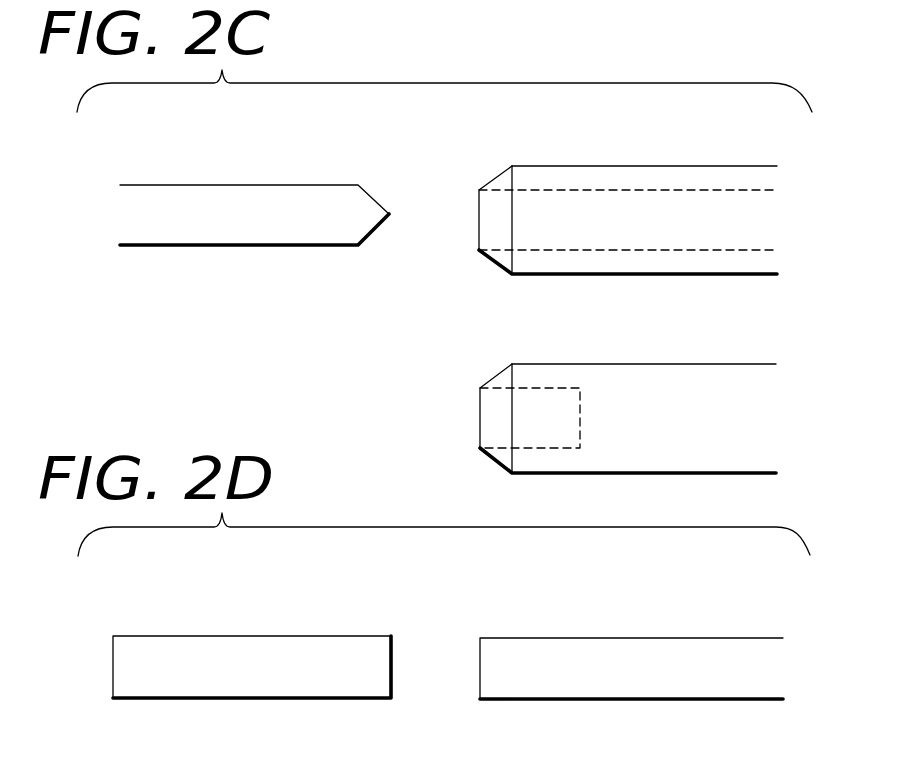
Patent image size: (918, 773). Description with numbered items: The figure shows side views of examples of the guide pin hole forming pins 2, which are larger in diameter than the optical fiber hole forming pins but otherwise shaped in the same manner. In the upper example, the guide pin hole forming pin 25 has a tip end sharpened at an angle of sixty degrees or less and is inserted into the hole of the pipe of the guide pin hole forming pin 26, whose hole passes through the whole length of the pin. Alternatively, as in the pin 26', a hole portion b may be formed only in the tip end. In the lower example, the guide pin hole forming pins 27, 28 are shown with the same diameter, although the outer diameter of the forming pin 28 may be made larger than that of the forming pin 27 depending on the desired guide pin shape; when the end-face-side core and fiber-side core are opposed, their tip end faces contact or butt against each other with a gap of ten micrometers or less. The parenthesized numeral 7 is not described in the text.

In FIG. 2C, the guide pin hole forming pin 2 is at (175, 236).
In FIG. 2D, the guide pin hole forming pin 2 is at (174, 645).
In FIG. 2C, the second member (base body) 7 is at (556, 172).
In FIG. 2D, the second member (base body) 7 is at (556, 645).
In FIG. 2C, the guide pin hole forming pin 25 is at (258, 185).
In FIG. 2C, the guide pin hole forming pin 26 is at (628, 189).
In FIG. 2C, the guide pin hole forming pin 26' is at (599, 389).
In FIG. 2C, the hole portion b is at (488, 423).
In FIG. 2D, the guide pin hole forming pin 27 is at (258, 636).
In FIG. 2D, the guide pin hole forming pin 28 is at (698, 638).